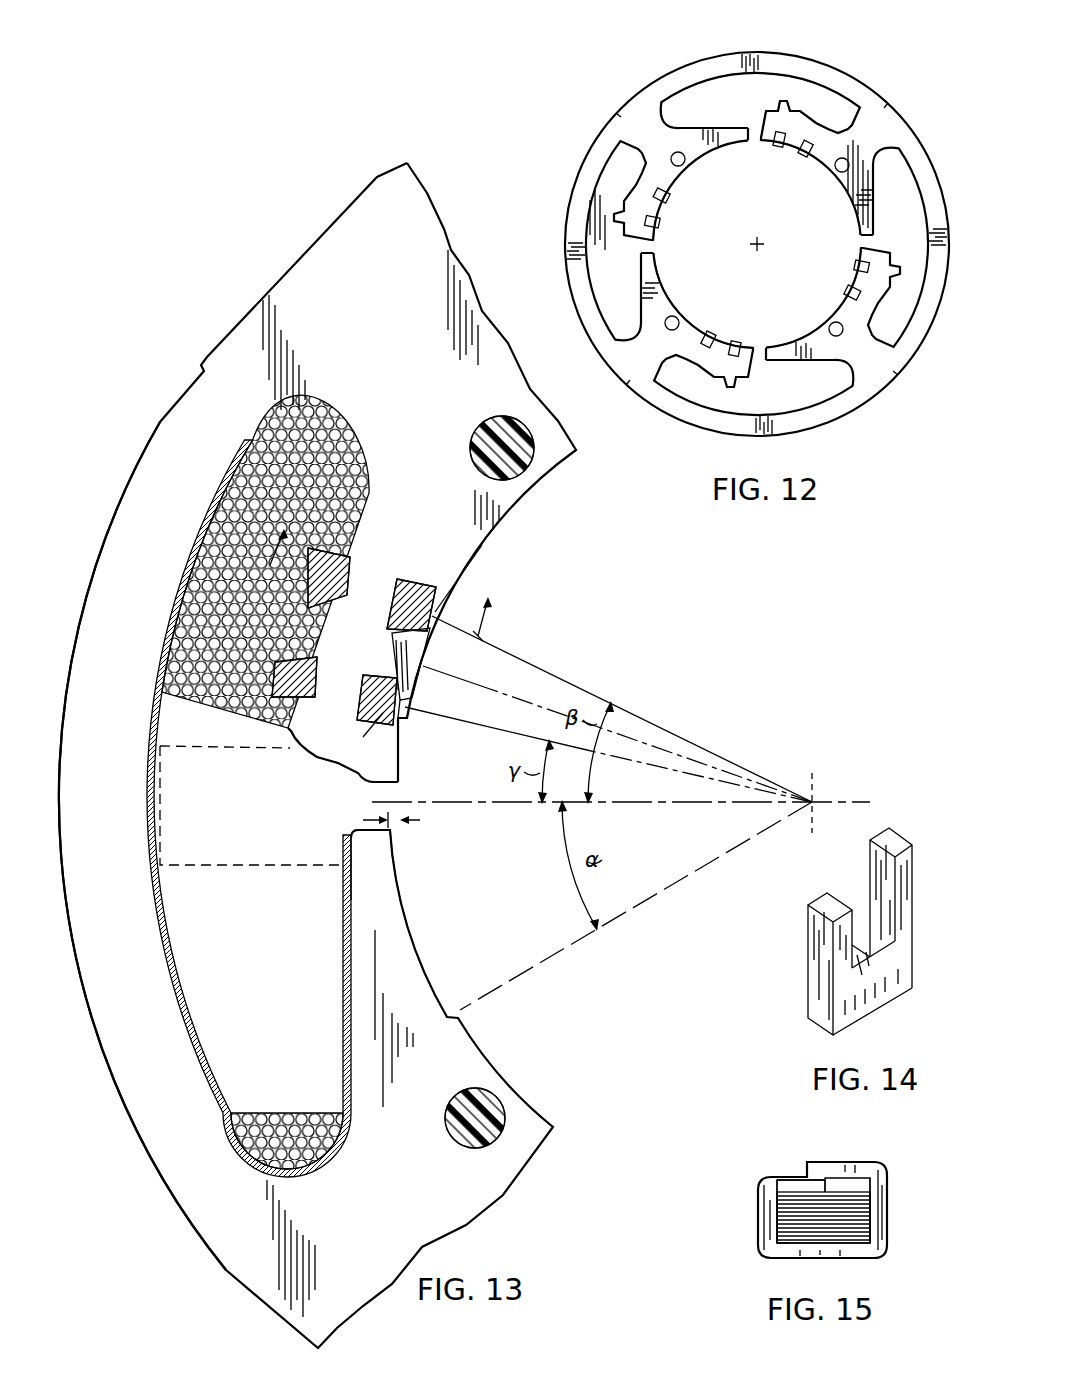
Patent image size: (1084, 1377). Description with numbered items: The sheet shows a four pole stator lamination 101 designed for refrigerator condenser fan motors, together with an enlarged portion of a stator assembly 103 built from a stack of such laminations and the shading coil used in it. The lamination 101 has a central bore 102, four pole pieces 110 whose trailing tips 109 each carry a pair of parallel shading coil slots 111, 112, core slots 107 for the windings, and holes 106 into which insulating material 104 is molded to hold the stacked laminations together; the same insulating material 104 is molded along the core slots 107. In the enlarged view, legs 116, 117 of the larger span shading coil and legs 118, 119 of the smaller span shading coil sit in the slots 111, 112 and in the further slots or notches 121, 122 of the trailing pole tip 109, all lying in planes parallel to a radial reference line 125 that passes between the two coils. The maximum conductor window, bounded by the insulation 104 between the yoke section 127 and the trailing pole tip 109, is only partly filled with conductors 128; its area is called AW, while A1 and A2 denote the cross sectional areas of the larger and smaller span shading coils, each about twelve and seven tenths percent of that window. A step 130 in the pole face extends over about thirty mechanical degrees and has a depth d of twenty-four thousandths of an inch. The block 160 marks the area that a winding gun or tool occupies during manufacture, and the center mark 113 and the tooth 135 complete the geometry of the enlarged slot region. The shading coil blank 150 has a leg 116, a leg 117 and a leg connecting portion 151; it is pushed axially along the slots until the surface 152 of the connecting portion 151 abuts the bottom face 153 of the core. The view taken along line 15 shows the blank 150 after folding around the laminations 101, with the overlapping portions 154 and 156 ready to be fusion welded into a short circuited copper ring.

In FIG. 12, the lamination 101 is at (853, 78).
In FIG. 15, the lamination 101 is at (862, 1218).
In FIG. 12, the bore 102 is at (830, 178).
In FIG. 13, the stator assembly 103 is at (428, 192).
In FIG. 13, the insulating material 104 is at (270, 440).
In FIG. 12, the holes 106 is at (835, 165).
In FIG. 13, the holes 106 is at (483, 474).
In FIG. 12, the core slots 107 is at (719, 112).
In FIG. 13, the core slots 107 is at (216, 814).
In FIG. 12, the trailing pole tip 109 is at (783, 101).
In FIG. 13, the trailing pole tip 109 is at (313, 753).
In FIG. 12, the pole pieces 110 is at (630, 144).
In FIG. 13, the pole pieces 110 is at (390, 339).
In FIG. 12, the shading coil slot 111 is at (657, 223).
In FIG. 13, the shading coil slot 111 is at (358, 712).
In FIG. 12, the shading coil slot 112 is at (659, 200).
In FIG. 13, the shading coil slot 112 is at (410, 578).
In FIG. 12, the center axis 113 is at (766, 240).
In FIG. 13, the leg 116 is at (336, 597).
In FIG. 14, the leg 116 is at (837, 953).
In FIG. 15, the leg 116 is at (768, 1218).
In FIG. 13, the leg 117 is at (397, 592).
In FIG. 14, the leg 117 is at (912, 893).
In FIG. 15, the leg 117 is at (878, 1192).
In FIG. 13, the leg 118 is at (316, 660).
In FIG. 13, the leg 119 is at (379, 728).
In FIG. 13, the slot 121 is at (316, 684).
In FIG. 13, the slot 122 is at (352, 557).
In FIG. 13, the reference line 125 is at (477, 685).
In FIG. 13, the yoke section 127 is at (100, 660).
In FIG. 13, the conductors 128 is at (327, 414).
In FIG. 12, the step 130 is at (722, 143).
In FIG. 13, the step 130 is at (418, 953).
In FIG. 13, the tooth 135 is at (355, 833).
In FIG. 14, the shading coil blank 150 is at (857, 932).
In FIG. 15, the shading coil blank 150 is at (816, 1208).
In FIG. 14, the leg connecting portion 151 is at (872, 1007).
In FIG. 14, the surface 152 is at (863, 982).
In FIG. 15, the surface 152 is at (790, 1238).
In FIG. 15, the bottom face 153 is at (843, 1250).
In FIG. 15, the overlapping portion 154 is at (816, 1170).
In FIG. 15, the overlapping portion 156 is at (813, 1187).
In FIG. 13, the block 160 is at (188, 867).
In FIG. 13, the section line 15 is at (386, 574).
In FIG. 13, the area of maximum winding window AW is at (215, 543).
In FIG. 13, the cross sectional area of larger span shading coil A1 is at (420, 588).
In FIG. 13, the cross sectional area of smaller span shading coil A2 is at (365, 728).
In FIG. 13, the depth of the step d is at (399, 831).